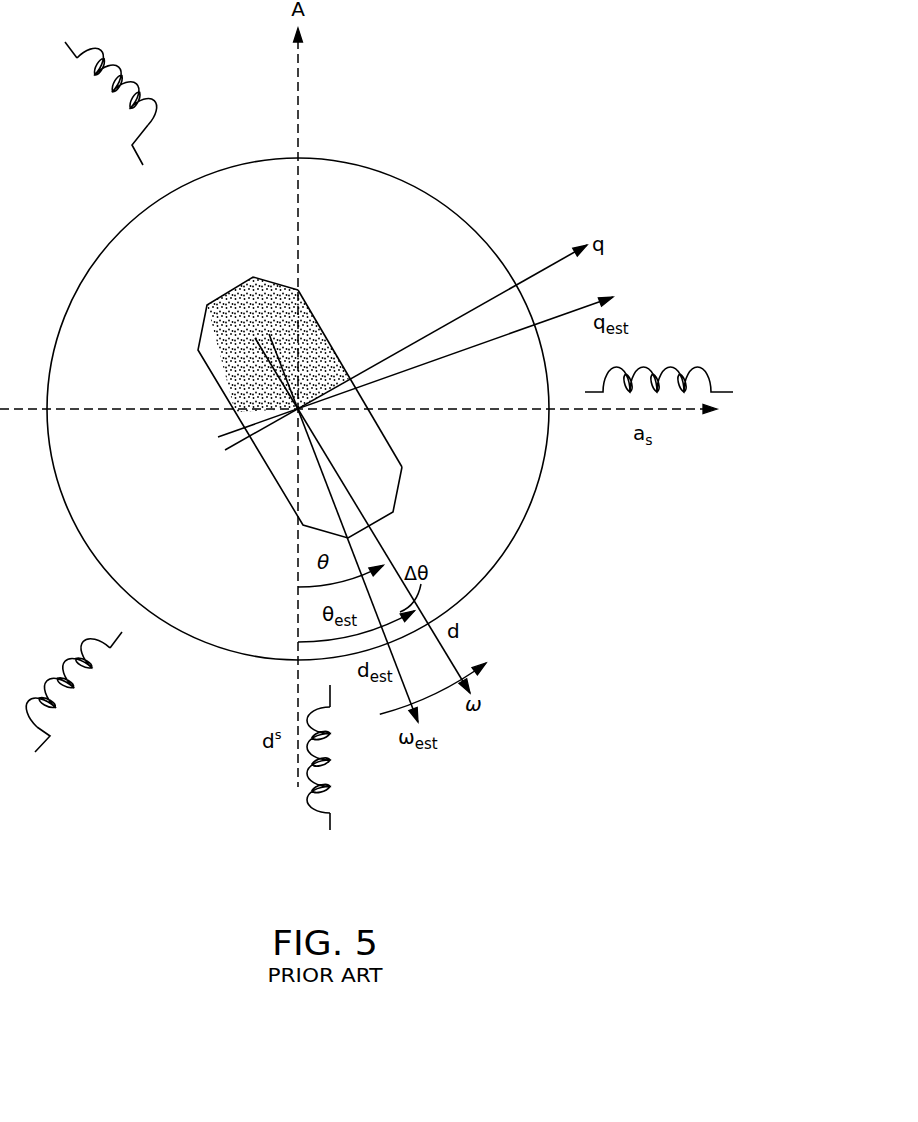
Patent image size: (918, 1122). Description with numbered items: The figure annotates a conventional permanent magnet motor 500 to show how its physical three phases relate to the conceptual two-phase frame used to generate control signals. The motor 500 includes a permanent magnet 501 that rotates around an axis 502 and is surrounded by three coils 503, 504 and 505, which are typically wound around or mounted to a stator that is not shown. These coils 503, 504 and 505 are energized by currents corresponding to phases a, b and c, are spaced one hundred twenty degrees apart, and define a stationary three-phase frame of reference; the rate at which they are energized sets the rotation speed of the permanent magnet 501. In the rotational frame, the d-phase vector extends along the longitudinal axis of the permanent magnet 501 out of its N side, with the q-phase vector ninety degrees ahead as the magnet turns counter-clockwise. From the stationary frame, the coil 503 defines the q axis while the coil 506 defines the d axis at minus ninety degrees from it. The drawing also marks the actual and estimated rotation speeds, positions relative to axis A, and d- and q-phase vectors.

The permanent magnet motor 500 is at (584, 87).
The permanent magnet 501 is at (320, 280).
The axis 502 is at (336, 360).
The coil 503 is at (712, 372).
The coil 504 is at (150, 122).
The coil 505 is at (77, 690).
The coil 506 is at (341, 808).